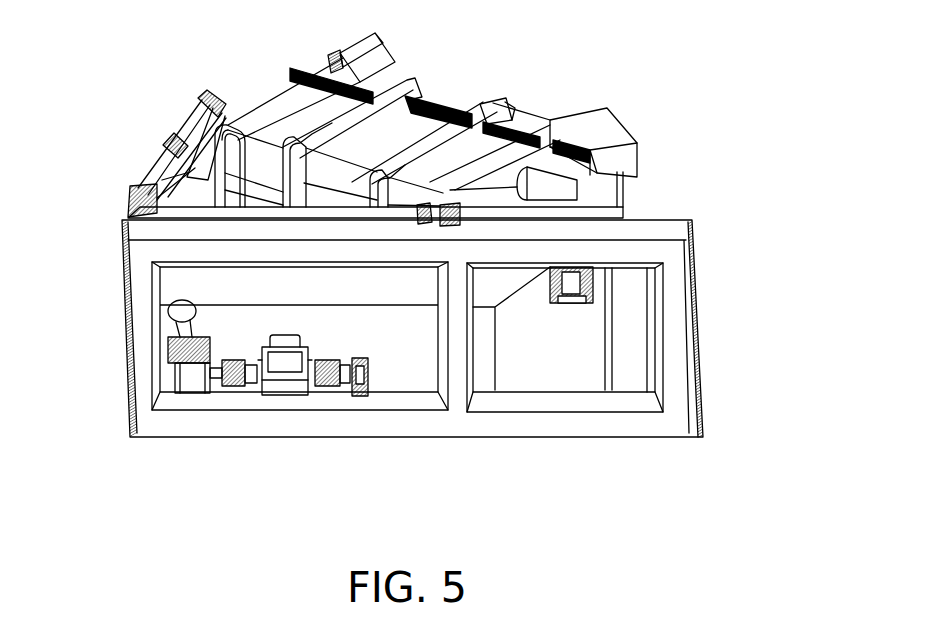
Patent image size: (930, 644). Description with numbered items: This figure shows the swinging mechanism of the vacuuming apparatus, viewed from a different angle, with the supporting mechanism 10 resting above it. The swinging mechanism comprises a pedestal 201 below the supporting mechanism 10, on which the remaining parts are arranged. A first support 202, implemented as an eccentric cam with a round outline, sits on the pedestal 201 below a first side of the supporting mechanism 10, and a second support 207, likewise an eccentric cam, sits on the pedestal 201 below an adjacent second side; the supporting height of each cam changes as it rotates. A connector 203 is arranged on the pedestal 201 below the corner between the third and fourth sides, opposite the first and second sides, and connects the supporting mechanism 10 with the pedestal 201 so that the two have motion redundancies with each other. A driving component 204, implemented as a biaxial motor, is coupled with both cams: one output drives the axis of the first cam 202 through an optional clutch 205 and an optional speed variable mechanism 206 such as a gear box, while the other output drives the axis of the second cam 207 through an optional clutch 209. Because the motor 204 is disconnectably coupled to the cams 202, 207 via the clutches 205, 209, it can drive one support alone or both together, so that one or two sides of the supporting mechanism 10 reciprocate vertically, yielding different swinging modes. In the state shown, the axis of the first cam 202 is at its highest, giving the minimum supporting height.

The supporting mechanism 10 is at (170, 93).
The pedestal 201 is at (672, 352).
The first support 202 is at (163, 317).
The connector 203 is at (590, 282).
The driving component 204 is at (277, 390).
The clutch 205 is at (228, 383).
The speed variable mechanism 206 is at (177, 373).
The second support 207 is at (370, 392).
The clutch 209 is at (330, 388).